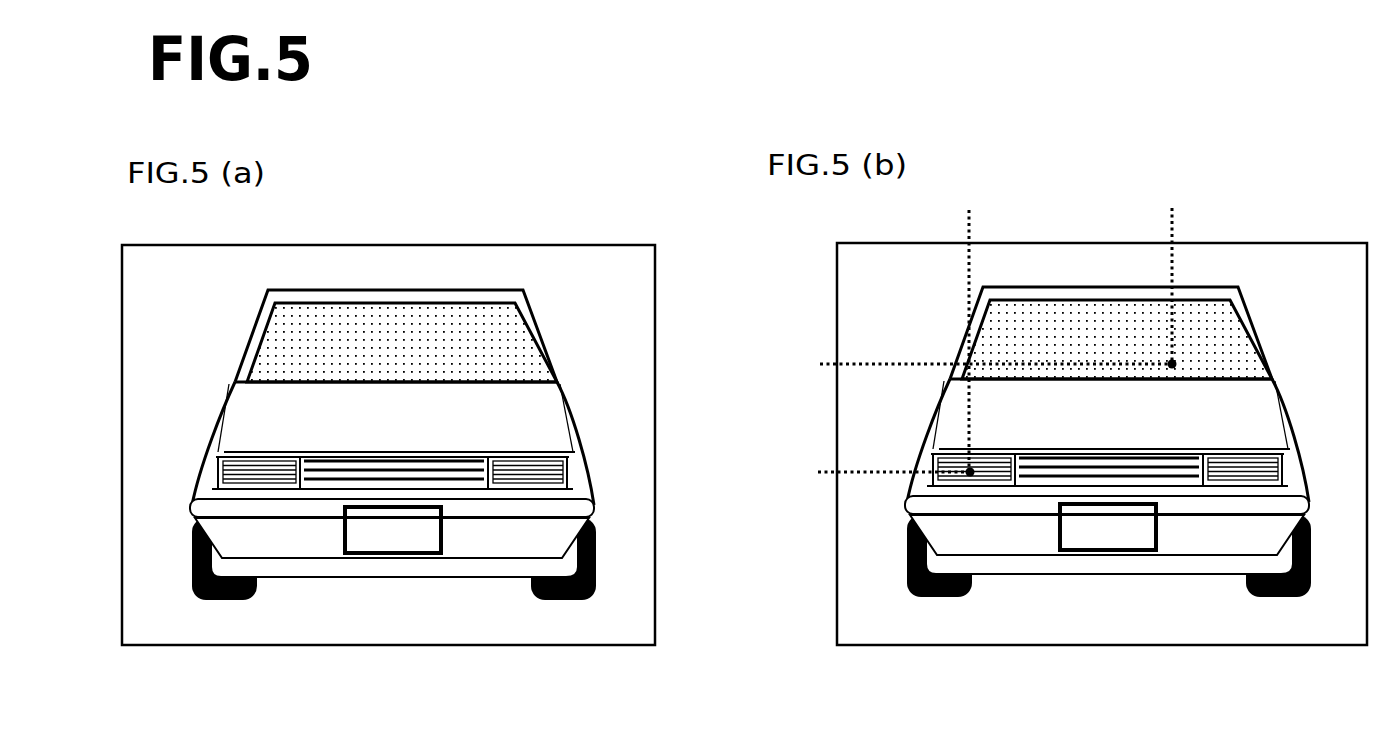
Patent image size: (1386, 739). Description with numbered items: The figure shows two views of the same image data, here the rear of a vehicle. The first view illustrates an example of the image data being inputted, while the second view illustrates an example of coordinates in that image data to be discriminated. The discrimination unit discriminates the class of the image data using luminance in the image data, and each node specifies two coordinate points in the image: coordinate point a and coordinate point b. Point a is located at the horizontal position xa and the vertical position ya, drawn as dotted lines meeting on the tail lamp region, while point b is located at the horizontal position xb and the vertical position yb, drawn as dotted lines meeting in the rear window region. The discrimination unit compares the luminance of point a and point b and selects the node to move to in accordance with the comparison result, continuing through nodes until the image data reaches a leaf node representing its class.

The x coordinate of point a xa is at (976, 324).
The x coordinate of point b xb is at (1175, 269).
The y coordinate of point a ya is at (876, 469).
The y coordinate of point b yb is at (976, 362).
The coordinate point a is at (970, 472).
The coordinate point b is at (1173, 366).